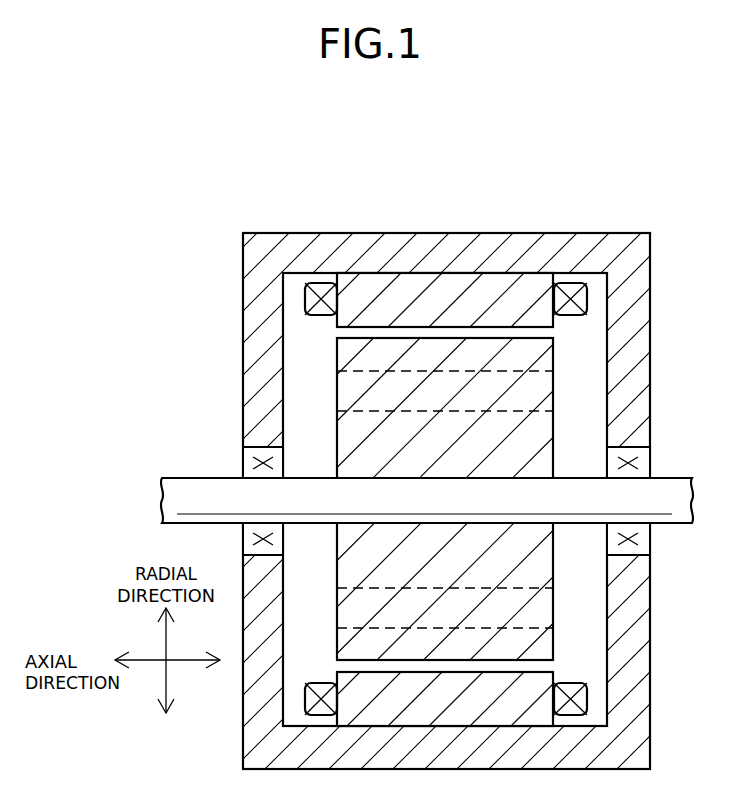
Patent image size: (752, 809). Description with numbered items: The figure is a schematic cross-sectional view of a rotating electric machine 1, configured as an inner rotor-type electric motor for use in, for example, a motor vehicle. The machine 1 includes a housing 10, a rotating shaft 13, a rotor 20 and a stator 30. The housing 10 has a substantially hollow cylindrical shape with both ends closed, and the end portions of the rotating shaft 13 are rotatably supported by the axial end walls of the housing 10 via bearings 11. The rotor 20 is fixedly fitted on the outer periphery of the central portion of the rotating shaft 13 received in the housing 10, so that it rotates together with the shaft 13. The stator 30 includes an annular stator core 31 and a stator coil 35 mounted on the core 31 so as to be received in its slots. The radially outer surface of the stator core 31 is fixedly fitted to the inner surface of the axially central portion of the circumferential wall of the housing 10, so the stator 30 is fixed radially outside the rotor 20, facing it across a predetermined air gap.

The rotating electric machine 1 is at (231, 168).
The housing 10 is at (250, 290).
The bearings 11 is at (262, 460).
The rotating shaft 13 is at (203, 498).
The rotor 20 is at (467, 337).
The stator 30 is at (435, 413).
The stator core 31 is at (387, 287).
The stator coil 35 is at (323, 283).